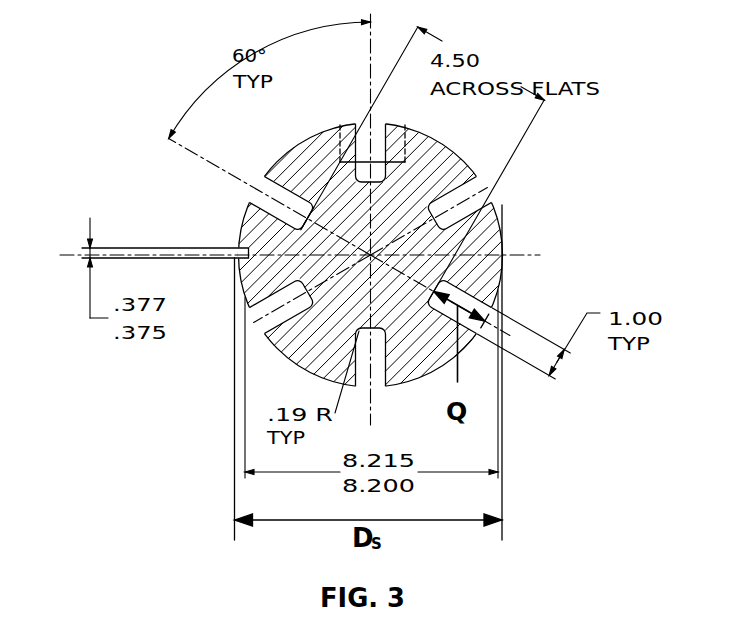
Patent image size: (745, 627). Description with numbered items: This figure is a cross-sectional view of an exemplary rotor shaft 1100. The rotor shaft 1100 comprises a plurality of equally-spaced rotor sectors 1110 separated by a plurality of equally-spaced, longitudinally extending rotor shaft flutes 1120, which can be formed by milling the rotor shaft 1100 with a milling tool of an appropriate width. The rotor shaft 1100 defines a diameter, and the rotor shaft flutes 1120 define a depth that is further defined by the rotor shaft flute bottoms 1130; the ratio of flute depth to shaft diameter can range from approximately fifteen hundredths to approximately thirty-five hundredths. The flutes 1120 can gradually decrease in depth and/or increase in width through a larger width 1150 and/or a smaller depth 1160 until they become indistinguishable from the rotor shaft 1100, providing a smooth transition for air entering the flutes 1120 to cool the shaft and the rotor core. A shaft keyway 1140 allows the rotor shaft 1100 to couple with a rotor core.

The rotor shaft 1100 is at (130, 42).
The rotor sectors 1110 is at (505, 220).
The rotor shaft flutes 1120 is at (270, 180).
The rotor shaft flute bottoms 1130 is at (303, 222).
The shaft keyway 1140 is at (235, 251).
The larger width 1150 is at (362, 148).
The smaller depth 1160 is at (410, 142).